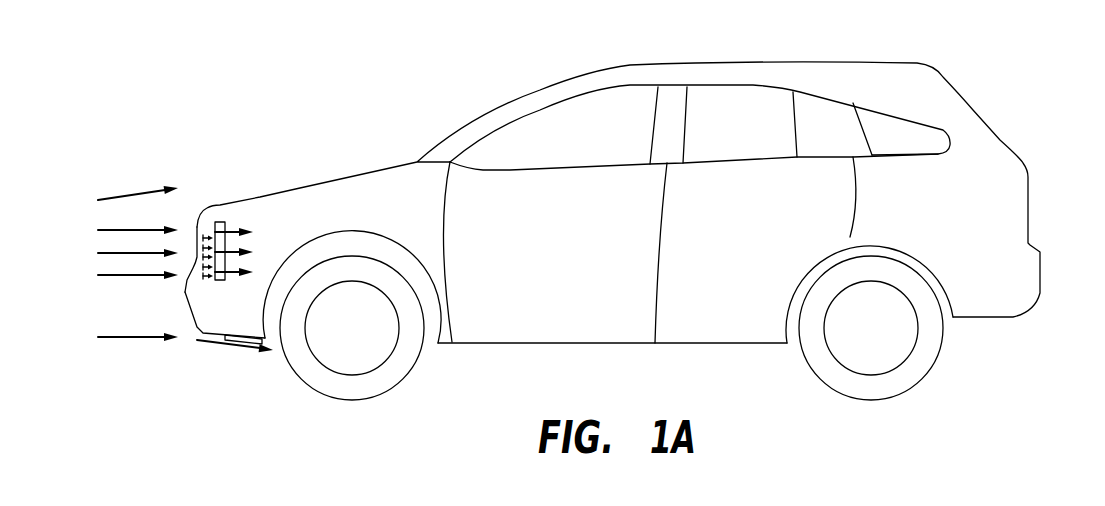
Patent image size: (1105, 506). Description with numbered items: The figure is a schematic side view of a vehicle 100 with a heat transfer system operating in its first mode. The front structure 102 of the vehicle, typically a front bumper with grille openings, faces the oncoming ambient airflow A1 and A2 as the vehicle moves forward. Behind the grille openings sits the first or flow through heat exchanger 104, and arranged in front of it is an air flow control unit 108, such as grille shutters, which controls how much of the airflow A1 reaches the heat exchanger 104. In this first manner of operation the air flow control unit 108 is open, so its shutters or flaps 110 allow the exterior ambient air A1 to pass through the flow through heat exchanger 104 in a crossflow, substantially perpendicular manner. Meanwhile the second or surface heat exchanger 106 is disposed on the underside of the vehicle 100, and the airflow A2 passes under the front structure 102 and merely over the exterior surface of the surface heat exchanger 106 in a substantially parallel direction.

The vehicle 100 is at (1013, 76).
The front structure 102 is at (185, 292).
The flow through heat exchanger 104 is at (220, 222).
The surface heat exchanger 106 is at (233, 350).
The air flow control unit 108 is at (207, 220).
The shutters or flaps 110 is at (206, 282).
The airflow A1 is at (125, 232).
The airflow A2 is at (173, 339).